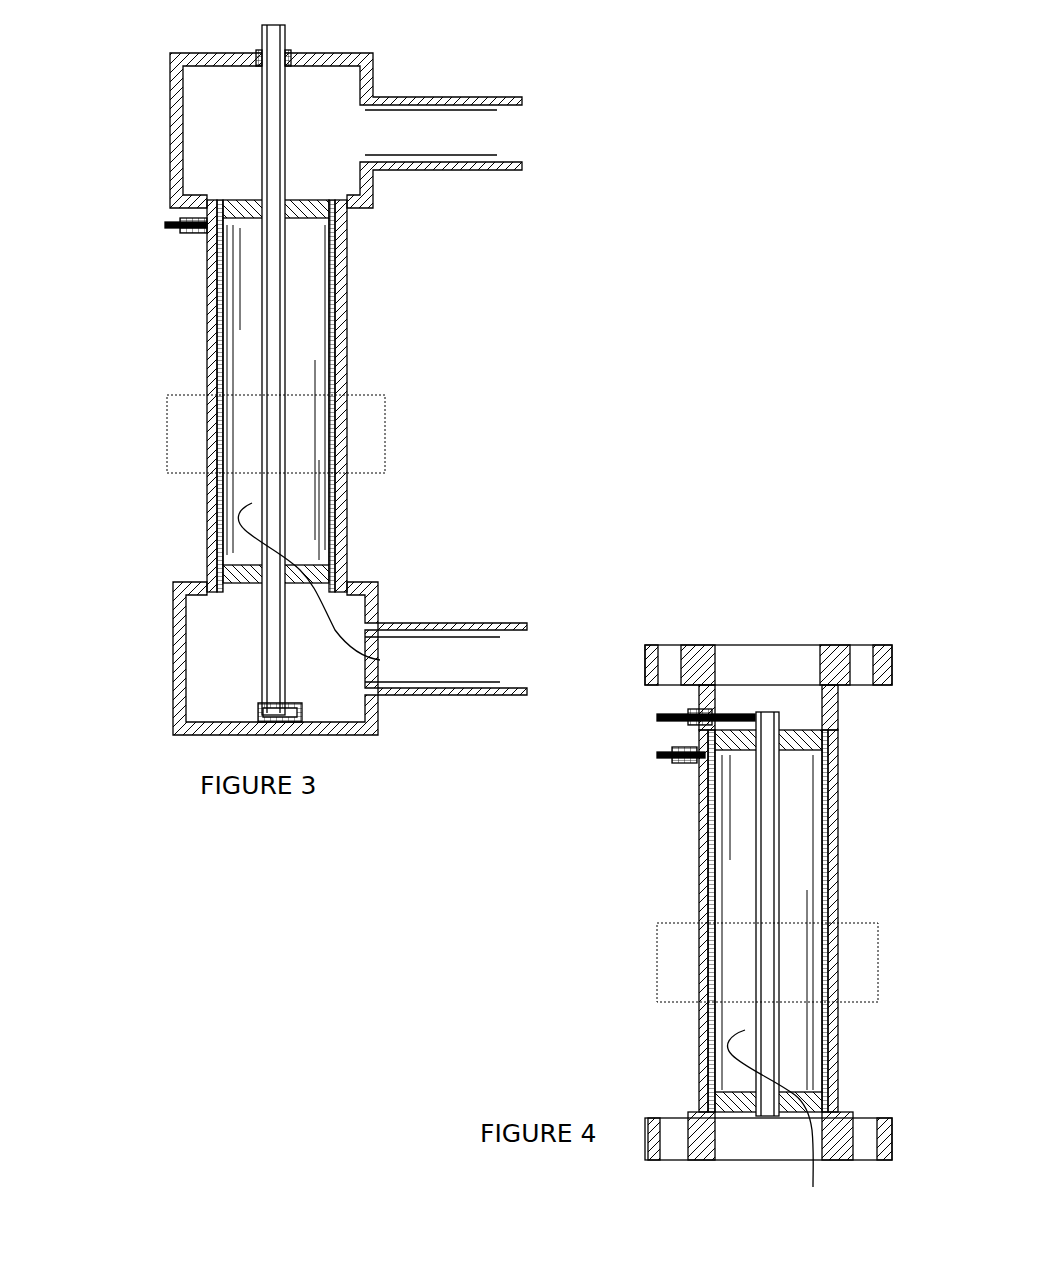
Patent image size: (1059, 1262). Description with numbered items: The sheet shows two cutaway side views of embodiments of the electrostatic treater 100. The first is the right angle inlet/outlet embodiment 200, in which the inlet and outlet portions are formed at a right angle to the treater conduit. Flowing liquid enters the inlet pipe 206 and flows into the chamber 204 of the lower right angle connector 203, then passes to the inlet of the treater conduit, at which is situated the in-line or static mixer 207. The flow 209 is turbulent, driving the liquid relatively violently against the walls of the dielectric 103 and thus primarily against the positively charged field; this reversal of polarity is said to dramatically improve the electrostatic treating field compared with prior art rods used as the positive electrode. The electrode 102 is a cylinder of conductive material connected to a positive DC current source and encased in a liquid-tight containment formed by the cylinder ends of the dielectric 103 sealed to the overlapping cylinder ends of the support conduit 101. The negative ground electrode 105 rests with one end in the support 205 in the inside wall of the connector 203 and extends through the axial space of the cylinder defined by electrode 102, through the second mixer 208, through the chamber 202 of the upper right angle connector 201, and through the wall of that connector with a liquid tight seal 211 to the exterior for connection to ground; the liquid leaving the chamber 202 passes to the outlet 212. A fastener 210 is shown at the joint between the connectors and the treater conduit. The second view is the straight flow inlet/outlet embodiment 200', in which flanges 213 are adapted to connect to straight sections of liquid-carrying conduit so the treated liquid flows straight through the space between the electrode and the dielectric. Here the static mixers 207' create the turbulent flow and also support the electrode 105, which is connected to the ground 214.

In FIG. 3, the treater 100 is at (167, 432).
In FIG. 4, the treater 100 is at (652, 965).
In FIG. 3, the support conduit 101 is at (206, 378).
In FIG. 4, the support conduit 101 is at (700, 907).
In FIG. 3, the electrode 102 is at (212, 313).
In FIG. 4, the electrode 102 is at (707, 850).
In FIG. 3, the dielectric 103 is at (218, 283).
In FIG. 4, the dielectric 103 is at (707, 812).
In FIG. 3, the electrode 105 is at (256, 45).
In FIG. 4, the electrode 105 is at (767, 914).
In FIG. 3, the right angle inlet/outlet embodiment 200 is at (327, 397).
In FIG. 4, the straight flow inlet/outlet embodiment 200' is at (676, 897).
In FIG. 3, the right angle connector 201 is at (170, 133).
In FIG. 3, the chamber 202 is at (218, 114).
In FIG. 3, the right angle connector 203 is at (172, 652).
In FIG. 3, the chamber 204 is at (215, 695).
In FIG. 3, the support 205 is at (297, 718).
In FIG. 3, the inlet pipe 206 is at (467, 668).
In FIG. 4, the inlet pipe 206 is at (769, 1153).
In FIG. 3, the in-line or static mixer 207 is at (210, 549).
In FIG. 4, the static mixers 207' is at (750, 909).
In FIG. 3, the second mixer 208 is at (235, 200).
In FIG. 3, the flow 209 is at (335, 589).
In FIG. 4, the flow 209 is at (788, 1124).
In FIG. 3, the fastening bolt 210 is at (163, 225).
In FIG. 4, the fastening bolt 210 is at (655, 755).
In FIG. 3, the liquid tight seal 211 is at (291, 48).
In FIG. 3, the outlet 212 is at (487, 130).
In FIG. 4, the outlet 212 is at (767, 668).
In FIG. 4, the flanges 213 is at (690, 640).
In FIG. 4, the ground 214 is at (652, 718).